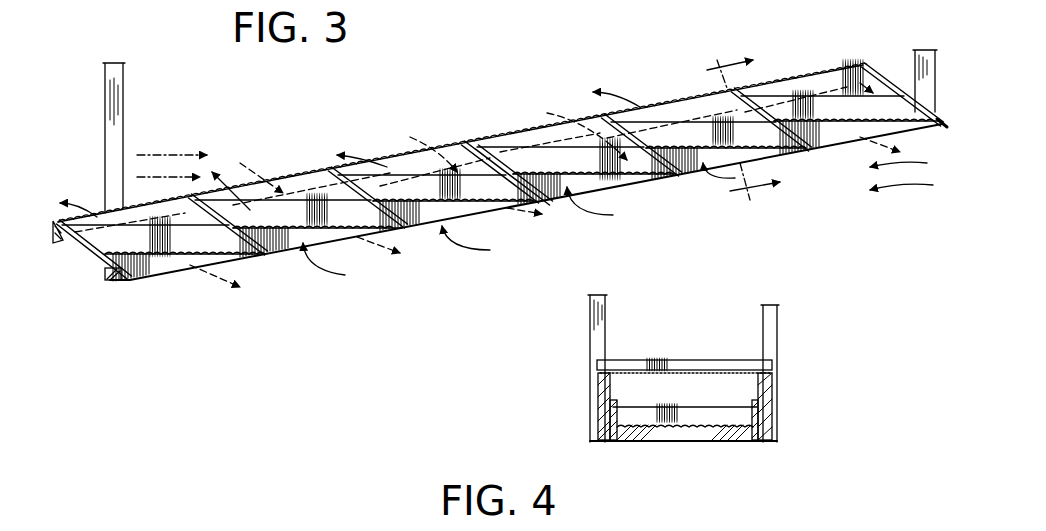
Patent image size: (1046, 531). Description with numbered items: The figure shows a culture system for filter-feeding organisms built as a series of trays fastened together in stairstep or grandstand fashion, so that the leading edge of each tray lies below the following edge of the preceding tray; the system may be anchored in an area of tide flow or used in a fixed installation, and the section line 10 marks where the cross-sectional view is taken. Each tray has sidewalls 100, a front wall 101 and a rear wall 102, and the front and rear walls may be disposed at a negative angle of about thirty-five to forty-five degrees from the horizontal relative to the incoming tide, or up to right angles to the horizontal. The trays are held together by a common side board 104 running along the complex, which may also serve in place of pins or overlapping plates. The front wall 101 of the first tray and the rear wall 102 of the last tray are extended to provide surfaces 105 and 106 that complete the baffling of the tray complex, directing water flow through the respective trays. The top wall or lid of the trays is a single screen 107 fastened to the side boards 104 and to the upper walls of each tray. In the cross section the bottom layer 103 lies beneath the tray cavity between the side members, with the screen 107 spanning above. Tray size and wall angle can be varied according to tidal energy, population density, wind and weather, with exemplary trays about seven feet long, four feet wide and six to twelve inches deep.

In FIG. 3, the section line 10 is at (735, 132).
In FIG. 3, the sidewalls 100 is at (643, 158).
In FIG. 4, the sidewalls 100 is at (607, 410).
In FIG. 3, the front wall 101 is at (937, 108).
In FIG. 3, the rear wall 102 is at (772, 97).
In FIG. 4, the rear wall 102 is at (696, 399).
In FIG. 3, the bottom insulation facing 103 is at (470, 203).
In FIG. 4, the bottom insulation facing 103 is at (662, 432).
In FIG. 3, the common side board 104 is at (415, 162).
In FIG. 4, the common side board 104 is at (600, 394).
In FIG. 3, the surface 105 is at (888, 78).
In FIG. 3, the surface 106 is at (118, 282).
In FIG. 3, the screen 107 is at (540, 128).
In FIG. 4, the screen 107 is at (706, 369).